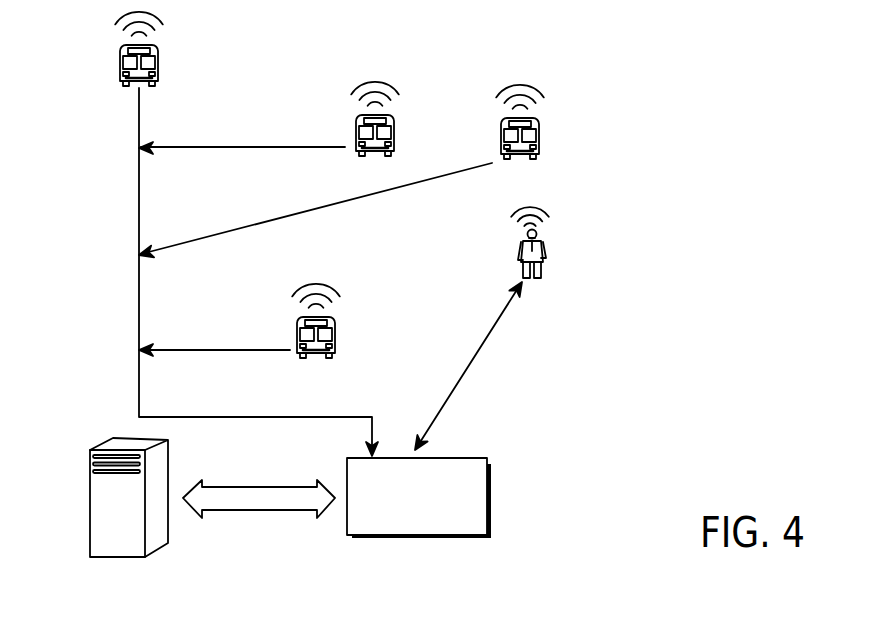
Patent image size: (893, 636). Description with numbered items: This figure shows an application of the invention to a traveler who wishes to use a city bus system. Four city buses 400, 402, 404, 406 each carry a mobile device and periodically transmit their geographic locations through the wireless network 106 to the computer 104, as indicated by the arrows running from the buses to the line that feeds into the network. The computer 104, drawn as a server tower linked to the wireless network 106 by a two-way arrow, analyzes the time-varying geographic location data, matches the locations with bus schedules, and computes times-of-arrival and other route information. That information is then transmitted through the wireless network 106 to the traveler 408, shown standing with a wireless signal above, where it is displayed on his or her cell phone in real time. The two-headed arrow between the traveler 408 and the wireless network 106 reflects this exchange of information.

The city bus 400 is at (158, 58).
The city bus 402 is at (418, 138).
The city bus 404 is at (538, 144).
The city bus 406 is at (335, 338).
The traveler 408 is at (543, 253).
The computer 104 is at (86, 533).
The wireless network 106 is at (440, 509).